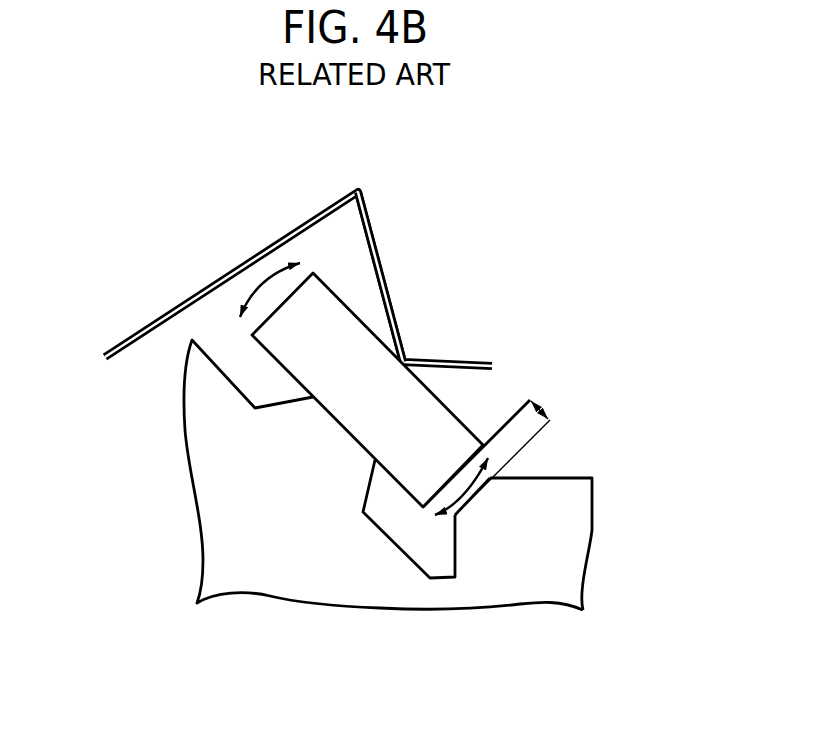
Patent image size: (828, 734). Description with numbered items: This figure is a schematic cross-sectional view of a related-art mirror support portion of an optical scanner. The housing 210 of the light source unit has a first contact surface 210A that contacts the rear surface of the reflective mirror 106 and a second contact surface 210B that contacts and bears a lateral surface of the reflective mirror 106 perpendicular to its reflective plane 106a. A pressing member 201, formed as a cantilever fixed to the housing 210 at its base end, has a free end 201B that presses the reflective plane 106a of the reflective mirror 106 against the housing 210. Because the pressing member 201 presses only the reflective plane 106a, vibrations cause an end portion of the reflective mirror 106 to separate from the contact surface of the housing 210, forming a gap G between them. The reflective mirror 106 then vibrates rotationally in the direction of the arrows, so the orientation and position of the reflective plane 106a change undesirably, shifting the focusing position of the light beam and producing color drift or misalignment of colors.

The pressing member 201 is at (371, 218).
The free end 201B is at (387, 280).
The reflective mirror 106 is at (352, 299).
The reflective plane 106a is at (485, 407).
The housing 210 is at (186, 430).
The first contact surface 210A is at (350, 430).
The second contact surface 210B is at (477, 494).
The gap G is at (540, 410).